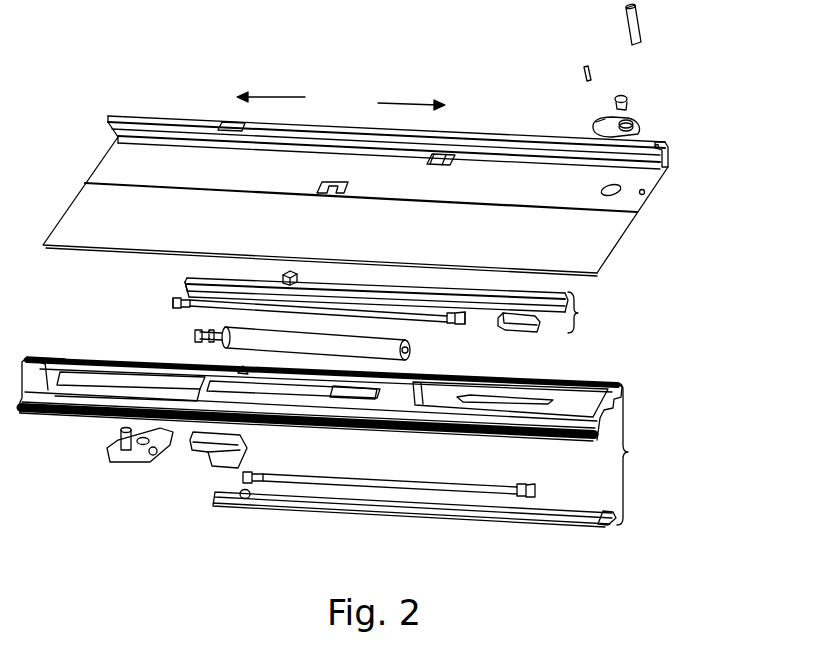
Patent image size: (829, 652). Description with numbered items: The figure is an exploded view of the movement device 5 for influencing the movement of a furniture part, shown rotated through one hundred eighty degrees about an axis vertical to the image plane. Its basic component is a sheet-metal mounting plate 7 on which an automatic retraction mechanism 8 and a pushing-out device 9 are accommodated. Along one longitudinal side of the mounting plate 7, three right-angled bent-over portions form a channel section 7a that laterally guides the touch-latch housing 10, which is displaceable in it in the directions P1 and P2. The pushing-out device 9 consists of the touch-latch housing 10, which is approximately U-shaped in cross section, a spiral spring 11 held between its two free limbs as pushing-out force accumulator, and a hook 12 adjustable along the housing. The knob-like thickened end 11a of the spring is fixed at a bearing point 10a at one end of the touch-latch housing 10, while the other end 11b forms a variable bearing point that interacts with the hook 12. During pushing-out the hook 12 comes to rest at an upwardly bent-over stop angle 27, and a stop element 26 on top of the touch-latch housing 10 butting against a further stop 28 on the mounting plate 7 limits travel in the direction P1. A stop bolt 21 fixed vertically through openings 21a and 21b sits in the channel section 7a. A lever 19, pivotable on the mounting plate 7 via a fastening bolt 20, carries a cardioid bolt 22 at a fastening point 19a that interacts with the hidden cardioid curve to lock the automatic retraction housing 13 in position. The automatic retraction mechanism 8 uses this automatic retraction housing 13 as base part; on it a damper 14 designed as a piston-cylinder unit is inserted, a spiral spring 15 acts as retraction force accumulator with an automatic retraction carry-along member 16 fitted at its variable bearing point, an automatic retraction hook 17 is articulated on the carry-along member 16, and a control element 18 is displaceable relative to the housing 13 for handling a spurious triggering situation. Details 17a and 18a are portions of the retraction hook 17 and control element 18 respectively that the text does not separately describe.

The movement device 5 is at (80, 81).
The displacement direction P1 is at (280, 97).
The displacement direction P2 is at (412, 103).
The mounting plate 7 is at (612, 238).
The channel section 7a is at (358, 137).
The stop 28 is at (232, 125).
The stop angle 27 is at (437, 157).
The opening 21a is at (660, 143).
The opening 21b is at (672, 168).
The stop bolt 21 is at (638, 22).
The cardioid bolt 22 is at (592, 72).
The fastening bolt 20 is at (628, 97).
The lever 19 is at (641, 122).
The fastening point 19a is at (600, 123).
The pushing-out device 9 is at (581, 312).
The touch-latch housing 10 is at (190, 278).
The bearing point 10a is at (187, 284).
The stop element 26 is at (283, 275).
The spiral spring 11 is at (185, 309).
The end of the spiral spring 11a is at (173, 302).
The end of the spiral spring 11b is at (458, 320).
The hook 12 is at (520, 331).
The damper 14 is at (414, 344).
The automatic retraction mechanism 8 is at (332, 441).
The automatic retraction housing 13 is at (63, 357).
The guide block 17a is at (80, 386).
The automatic retraction hook 17 is at (123, 458).
The automatic retraction carry-along member 16 is at (207, 458).
The spiral spring 15 is at (327, 472).
The control element 18 is at (320, 510).
The end of guide rail 18a is at (550, 522).